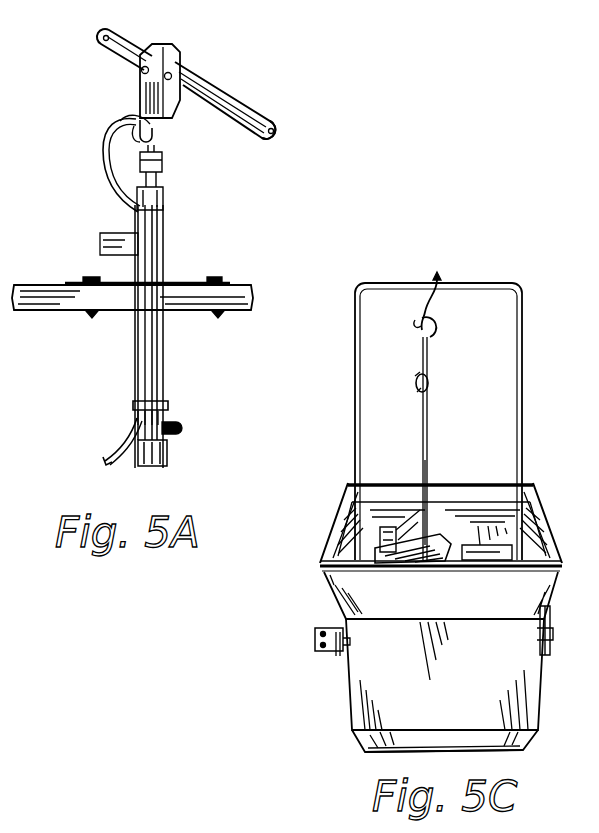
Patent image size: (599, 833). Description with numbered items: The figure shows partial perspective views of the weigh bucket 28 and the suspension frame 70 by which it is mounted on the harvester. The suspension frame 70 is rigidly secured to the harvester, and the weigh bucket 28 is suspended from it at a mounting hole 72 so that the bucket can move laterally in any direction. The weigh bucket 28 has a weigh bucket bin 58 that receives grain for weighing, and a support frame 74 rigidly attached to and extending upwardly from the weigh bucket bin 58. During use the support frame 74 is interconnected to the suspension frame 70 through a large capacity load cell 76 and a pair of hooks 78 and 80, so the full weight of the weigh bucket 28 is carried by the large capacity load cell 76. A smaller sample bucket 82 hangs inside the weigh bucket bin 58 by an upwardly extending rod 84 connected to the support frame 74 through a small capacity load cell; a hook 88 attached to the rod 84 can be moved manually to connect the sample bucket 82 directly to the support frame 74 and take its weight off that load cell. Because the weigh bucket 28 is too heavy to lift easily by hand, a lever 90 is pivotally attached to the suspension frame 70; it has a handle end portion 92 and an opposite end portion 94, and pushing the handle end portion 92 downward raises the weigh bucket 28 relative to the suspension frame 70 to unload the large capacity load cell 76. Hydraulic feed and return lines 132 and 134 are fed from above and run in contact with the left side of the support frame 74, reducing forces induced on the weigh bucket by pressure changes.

In FIG. 5C, the weigh bucket 28 is at (533, 457).
In FIG. 5C, the weigh bucket bin 58 is at (395, 718).
In FIG. 5A, the suspension frame 70 is at (138, 104).
In FIG. 5A, the mounting hole 72 is at (153, 127).
In FIG. 5A, the support frame 74 is at (167, 461).
In FIG. 5C, the support frame 74 is at (463, 283).
In FIG. 5A, the large capacity load cell 76 is at (163, 168).
In FIG. 5A, the hook 78 is at (130, 205).
In FIG. 5A, the hook 80 is at (160, 143).
In FIG. 5C, the sample bucket 82 is at (425, 534).
In FIG. 5C, the rod 84 is at (427, 461).
In FIG. 5C, the hook 88 is at (428, 355).
In FIG. 5A, the lever 90 is at (210, 91).
In FIG. 5A, the handle end portion 92 is at (277, 133).
In FIG. 5A, the opposite end portion 94 is at (98, 42).
In FIG. 5A, the feed and return line 132 is at (157, 368).
In FIG. 5A, the feed and return line 134 is at (163, 387).